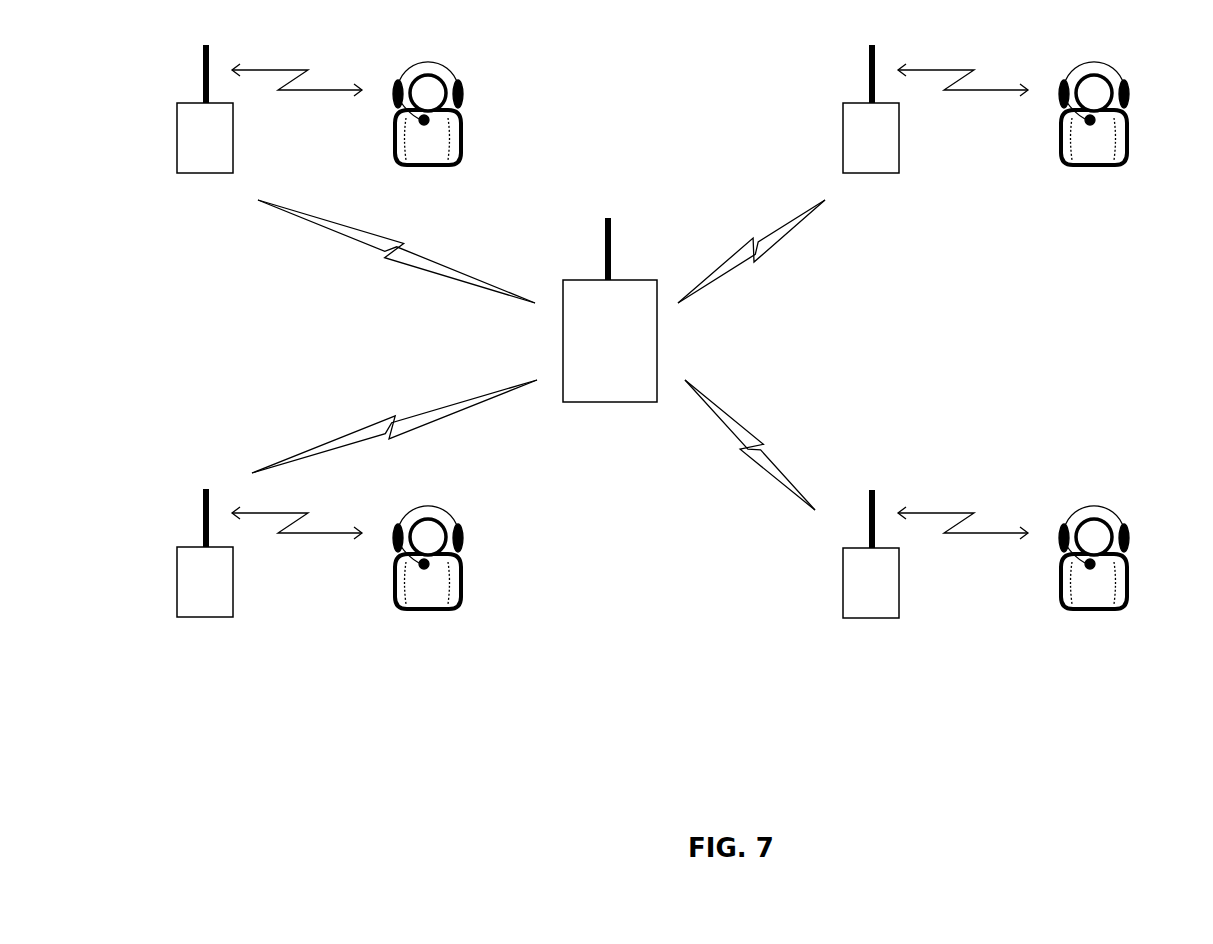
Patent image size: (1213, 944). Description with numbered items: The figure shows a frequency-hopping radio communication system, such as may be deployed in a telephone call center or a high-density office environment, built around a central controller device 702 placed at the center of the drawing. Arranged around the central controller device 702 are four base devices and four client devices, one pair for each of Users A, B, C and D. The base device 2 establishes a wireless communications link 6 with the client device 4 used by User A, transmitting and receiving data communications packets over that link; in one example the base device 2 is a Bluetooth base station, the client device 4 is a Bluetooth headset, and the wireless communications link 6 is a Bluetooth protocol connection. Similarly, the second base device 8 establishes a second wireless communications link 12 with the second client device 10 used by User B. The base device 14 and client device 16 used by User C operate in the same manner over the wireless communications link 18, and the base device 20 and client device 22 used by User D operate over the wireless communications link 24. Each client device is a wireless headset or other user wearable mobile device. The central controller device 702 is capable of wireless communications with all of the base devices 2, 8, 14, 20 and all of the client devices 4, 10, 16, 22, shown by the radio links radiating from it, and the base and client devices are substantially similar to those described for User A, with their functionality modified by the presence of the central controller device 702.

The central controller device 702 is at (610, 310).
The base device 2 is at (903, 117).
The client device 4 is at (1101, 113).
The wireless communications link 6 is at (963, 67).
The second base device 8 is at (238, 117).
The second client device 10 is at (433, 113).
The second wireless communications link 12 is at (297, 67).
The base device 14 is at (907, 562).
The client device 16 is at (1099, 557).
The wireless communications link 18 is at (963, 510).
The base device 20 is at (241, 561).
The client device 22 is at (433, 557).
The wireless communications link 24 is at (297, 510).